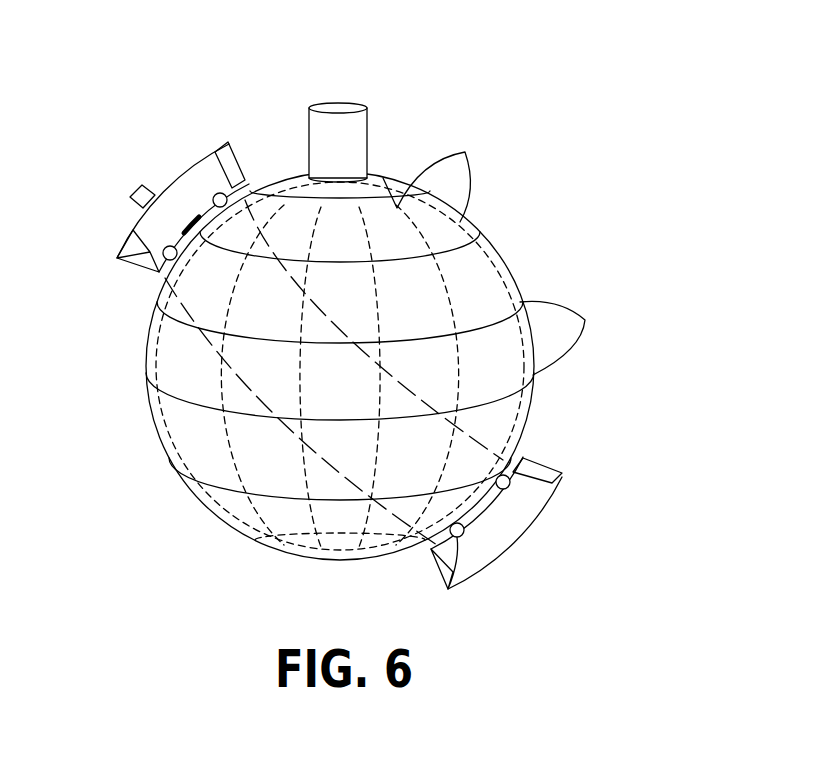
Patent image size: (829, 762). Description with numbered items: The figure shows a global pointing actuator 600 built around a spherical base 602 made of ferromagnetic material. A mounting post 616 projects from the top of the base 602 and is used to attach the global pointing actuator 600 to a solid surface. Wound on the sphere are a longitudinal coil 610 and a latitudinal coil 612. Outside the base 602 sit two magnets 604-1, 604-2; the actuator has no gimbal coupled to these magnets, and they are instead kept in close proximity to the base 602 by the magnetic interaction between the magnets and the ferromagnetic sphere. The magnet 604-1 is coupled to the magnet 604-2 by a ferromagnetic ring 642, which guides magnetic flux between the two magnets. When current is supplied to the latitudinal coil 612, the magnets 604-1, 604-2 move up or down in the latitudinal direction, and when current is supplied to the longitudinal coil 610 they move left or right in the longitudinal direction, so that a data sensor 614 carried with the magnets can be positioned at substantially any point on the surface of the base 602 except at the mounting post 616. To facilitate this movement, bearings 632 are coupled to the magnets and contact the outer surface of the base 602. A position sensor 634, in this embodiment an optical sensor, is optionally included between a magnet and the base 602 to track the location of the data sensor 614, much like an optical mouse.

The global pointing actuator 600 is at (475, 68).
The spherical base 602 is at (493, 293).
The magnet 604-1 is at (240, 158).
The magnet 604-2 is at (556, 428).
The longitudinal coil 610 is at (436, 176).
The latitudinal coil 612 is at (570, 338).
The data sensor 614 is at (155, 197).
The mounting post 616 is at (368, 133).
The bearings 632 is at (120, 262).
The position sensor 634 is at (182, 233).
The ferromagnetic ring 642 is at (318, 455).